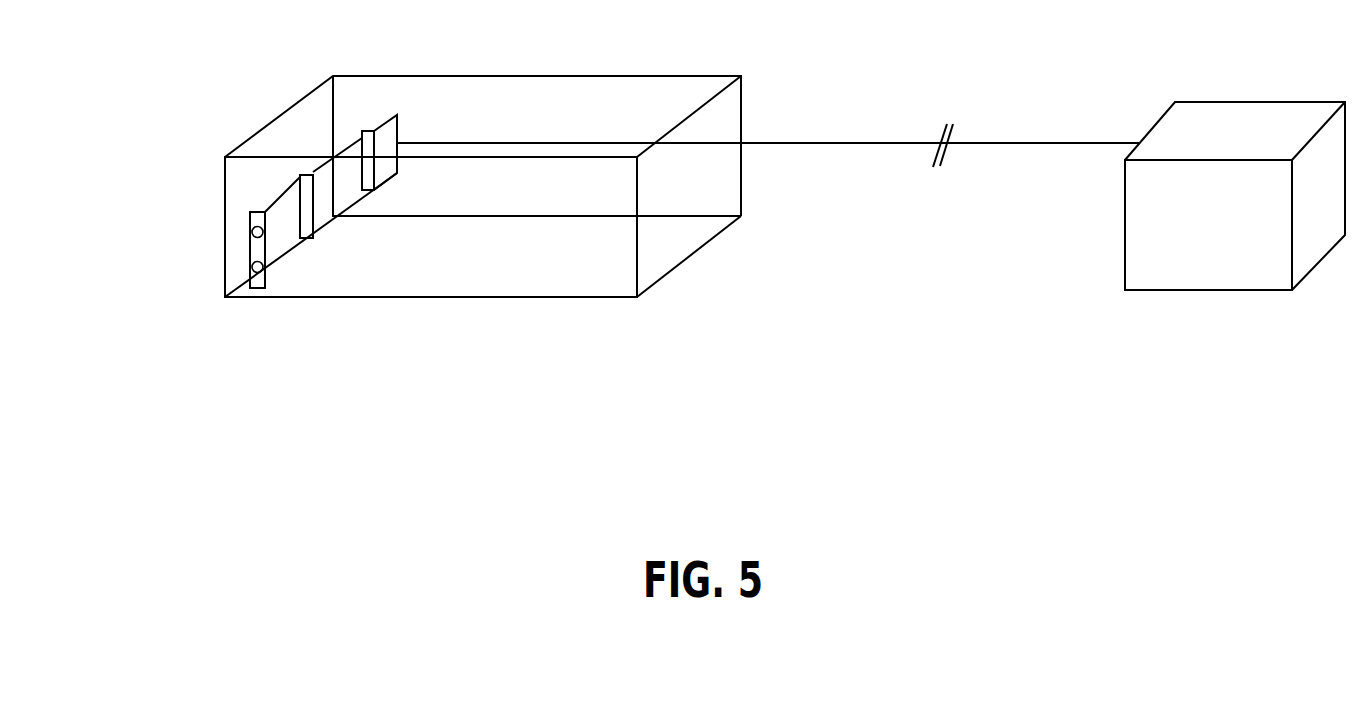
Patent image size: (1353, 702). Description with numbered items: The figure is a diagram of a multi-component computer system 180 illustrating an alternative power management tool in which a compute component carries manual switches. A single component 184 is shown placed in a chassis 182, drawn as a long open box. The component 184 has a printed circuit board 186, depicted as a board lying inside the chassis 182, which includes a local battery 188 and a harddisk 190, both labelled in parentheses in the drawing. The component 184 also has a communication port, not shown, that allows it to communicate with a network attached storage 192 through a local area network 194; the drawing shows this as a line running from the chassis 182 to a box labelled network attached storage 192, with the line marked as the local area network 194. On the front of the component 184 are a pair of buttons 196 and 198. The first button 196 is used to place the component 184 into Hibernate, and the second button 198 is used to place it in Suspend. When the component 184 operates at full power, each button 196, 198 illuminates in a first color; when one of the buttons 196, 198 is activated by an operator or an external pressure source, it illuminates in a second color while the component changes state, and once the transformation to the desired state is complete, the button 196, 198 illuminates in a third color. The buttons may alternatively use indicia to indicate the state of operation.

The multi-component computer system 180 is at (392, 225).
The chassis 182 is at (498, 76).
The component 184 is at (257, 283).
The printed circuit board 186 is at (292, 257).
The local battery 188 is at (287, 118).
The harddisk 190 is at (292, 184).
The network attached storage 192 is at (1198, 291).
The local area network 194 is at (1022, 143).
The first button 196 is at (252, 233).
The second button 198 is at (252, 266).